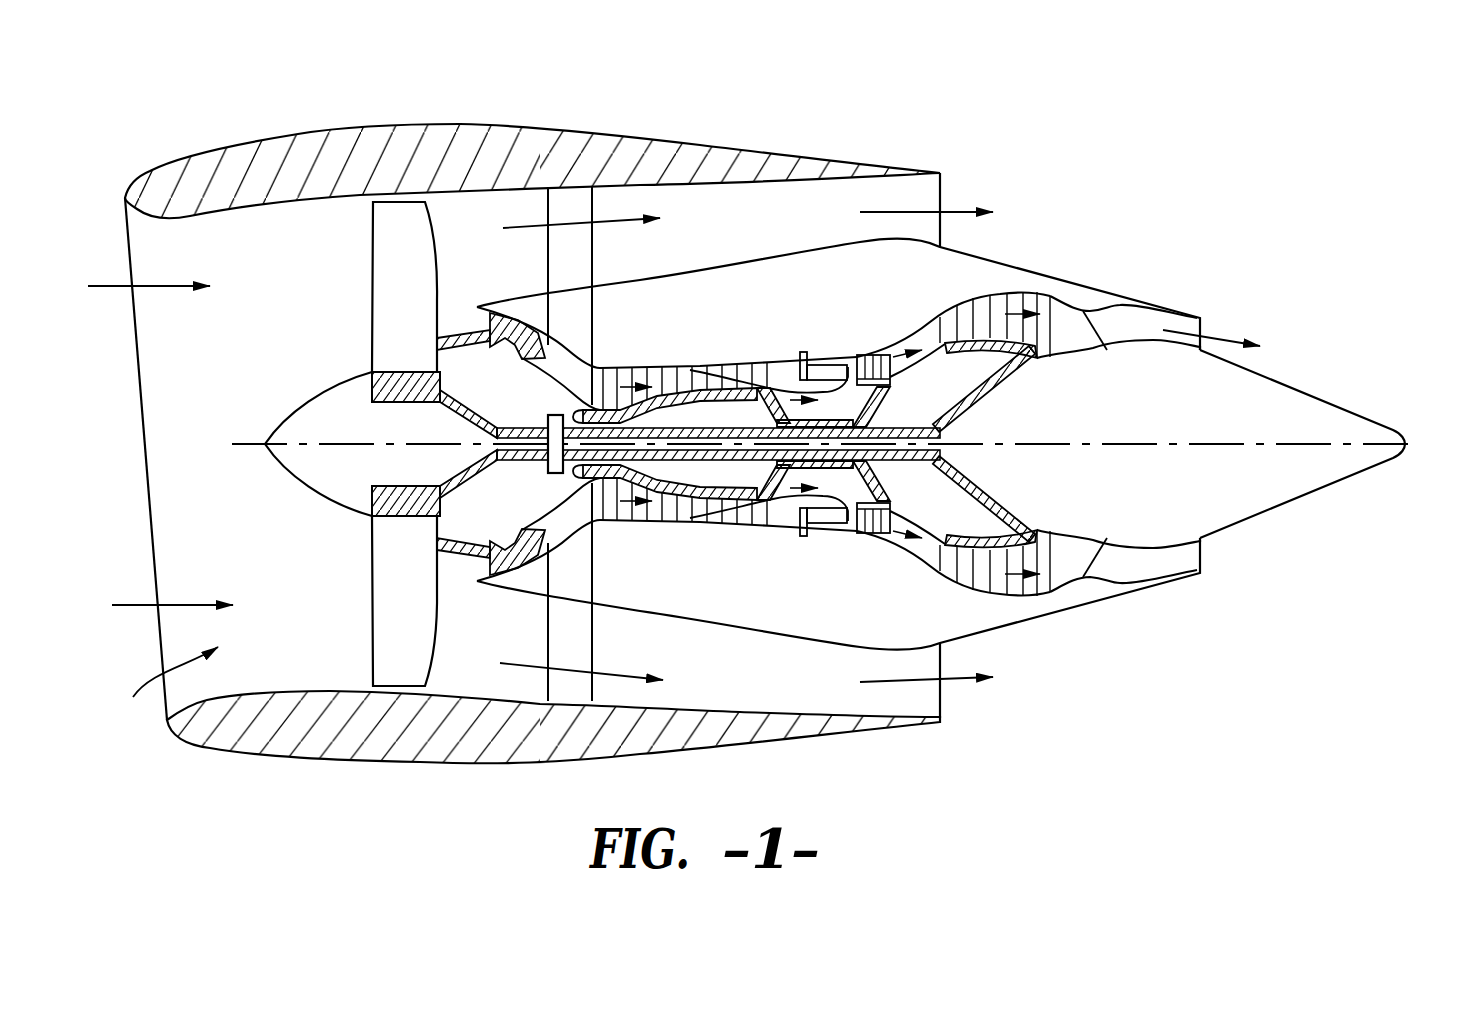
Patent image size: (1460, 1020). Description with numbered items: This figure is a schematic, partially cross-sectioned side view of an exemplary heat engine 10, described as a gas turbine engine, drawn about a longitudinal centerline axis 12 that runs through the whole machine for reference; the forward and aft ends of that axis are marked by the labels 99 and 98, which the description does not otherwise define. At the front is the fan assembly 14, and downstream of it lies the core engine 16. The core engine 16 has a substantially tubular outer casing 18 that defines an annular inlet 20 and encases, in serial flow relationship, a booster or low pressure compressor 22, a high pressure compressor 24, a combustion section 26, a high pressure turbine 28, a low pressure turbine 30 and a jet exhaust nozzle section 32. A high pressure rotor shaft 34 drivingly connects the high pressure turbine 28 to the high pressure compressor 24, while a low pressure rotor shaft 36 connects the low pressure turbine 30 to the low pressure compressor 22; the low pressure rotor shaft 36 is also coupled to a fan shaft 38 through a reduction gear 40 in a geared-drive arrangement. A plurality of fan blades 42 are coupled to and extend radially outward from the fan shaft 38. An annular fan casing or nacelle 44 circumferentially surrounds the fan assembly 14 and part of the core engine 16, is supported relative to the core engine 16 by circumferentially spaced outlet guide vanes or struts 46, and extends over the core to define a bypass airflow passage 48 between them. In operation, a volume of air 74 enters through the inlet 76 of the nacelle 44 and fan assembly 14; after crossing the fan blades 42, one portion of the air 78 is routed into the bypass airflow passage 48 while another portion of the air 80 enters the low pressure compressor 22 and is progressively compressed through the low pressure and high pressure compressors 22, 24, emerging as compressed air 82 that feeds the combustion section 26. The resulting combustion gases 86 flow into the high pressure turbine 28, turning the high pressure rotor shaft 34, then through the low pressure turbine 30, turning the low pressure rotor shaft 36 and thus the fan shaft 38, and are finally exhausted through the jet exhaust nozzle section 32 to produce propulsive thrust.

The heat engine 10 is at (1190, 198).
The longitudinal centerline axis 12 is at (1116, 443).
The fan assembly 14 is at (473, 226).
The core engine 16 is at (803, 247).
The outer casing 18 is at (780, 637).
The annular inlet 20 is at (483, 568).
The low pressure compressor 22 is at (557, 533).
The high pressure compressor 24 is at (625, 517).
The combustion section 26 is at (823, 530).
The high pressure turbine 28 is at (888, 520).
The low pressure turbine 30 is at (1027, 607).
The jet exhaust nozzle section 32 is at (1117, 570).
The high pressure rotor shaft 34 is at (873, 388).
The low pressure rotor shaft 36 is at (980, 403).
The fan shaft 38 is at (442, 403).
The reduction gear 40 is at (549, 410).
The fan blades 42 is at (387, 280).
The nacelle 44 is at (383, 126).
The outlet guide vanes or struts 46 is at (588, 208).
The bypass airflow passage 48 is at (706, 234).
The air 74 is at (158, 282).
The inlet 76 is at (160, 692).
The bypass air 78 is at (607, 228).
The core air 80 is at (458, 320).
The compressed air 82 is at (607, 377).
The combustion gases 86 is at (877, 365).
The aft station 98 is at (1416, 457).
The forward station 99 is at (84, 457).